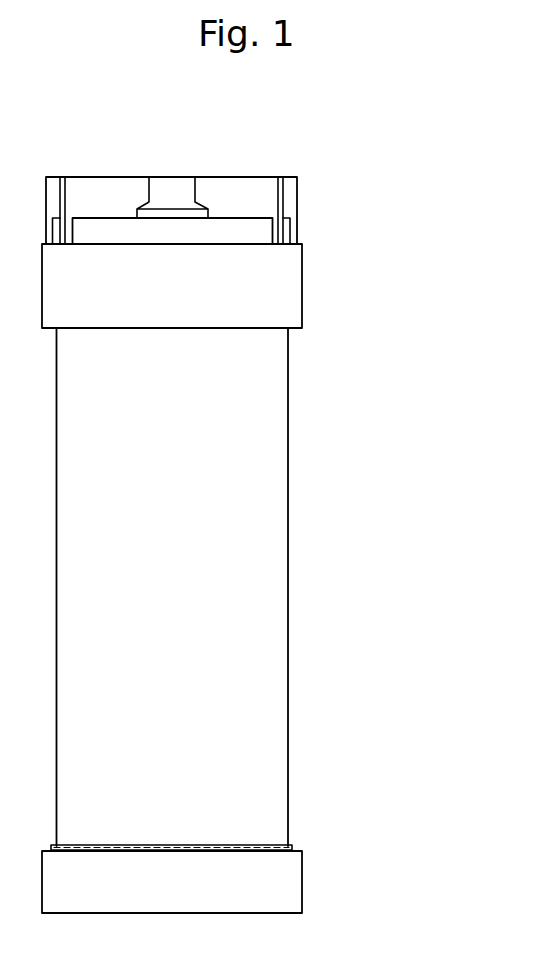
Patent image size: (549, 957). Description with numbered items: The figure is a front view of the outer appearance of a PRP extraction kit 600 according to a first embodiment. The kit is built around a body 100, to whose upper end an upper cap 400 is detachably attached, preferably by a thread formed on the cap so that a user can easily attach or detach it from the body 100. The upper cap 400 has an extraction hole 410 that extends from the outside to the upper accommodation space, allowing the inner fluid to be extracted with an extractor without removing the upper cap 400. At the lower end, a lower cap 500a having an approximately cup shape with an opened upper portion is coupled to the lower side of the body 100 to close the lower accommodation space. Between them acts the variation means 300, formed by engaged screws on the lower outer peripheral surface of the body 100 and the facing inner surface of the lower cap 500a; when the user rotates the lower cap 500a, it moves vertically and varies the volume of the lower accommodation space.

The PRP extraction kit 600 is at (352, 159).
The extraction hole 410 is at (178, 190).
The upper cap 400 is at (308, 287).
The body 100 is at (296, 578).
The variation means 300 is at (275, 845).
The lower cap 500a is at (310, 884).